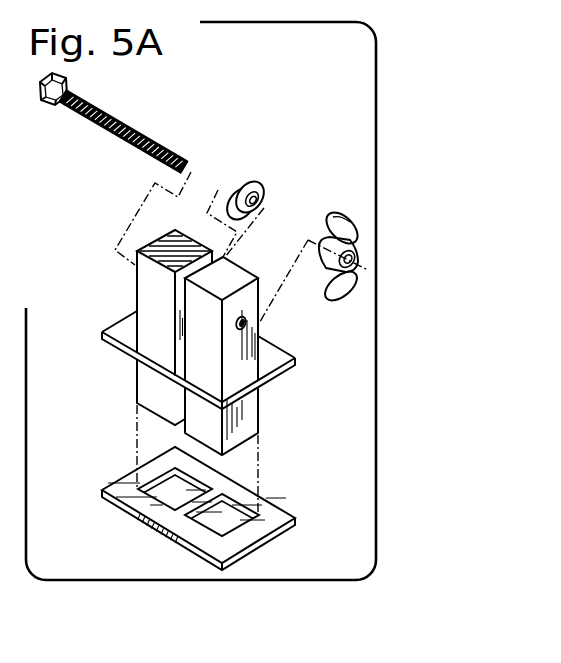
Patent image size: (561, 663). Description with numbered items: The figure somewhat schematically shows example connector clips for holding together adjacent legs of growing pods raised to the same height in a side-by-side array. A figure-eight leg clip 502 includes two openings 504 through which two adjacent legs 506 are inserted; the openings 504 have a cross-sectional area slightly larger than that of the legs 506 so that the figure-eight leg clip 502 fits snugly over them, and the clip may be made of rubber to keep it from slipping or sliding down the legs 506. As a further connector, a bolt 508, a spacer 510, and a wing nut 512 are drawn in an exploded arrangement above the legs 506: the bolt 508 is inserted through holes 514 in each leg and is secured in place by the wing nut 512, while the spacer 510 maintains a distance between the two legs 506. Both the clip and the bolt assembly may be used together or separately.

The figure-eight leg clip 502 is at (275, 356).
The openings 504 is at (221, 530).
The legs 506 is at (251, 424).
The bolt 508 is at (123, 120).
The spacer 510 is at (250, 184).
The wing nut 512 is at (337, 218).
The holes 514 is at (247, 323).